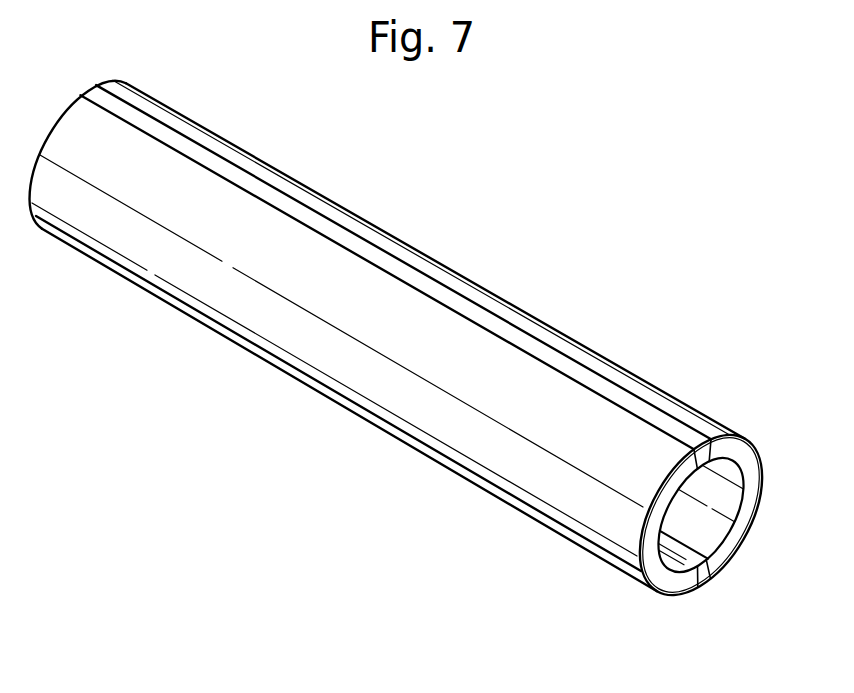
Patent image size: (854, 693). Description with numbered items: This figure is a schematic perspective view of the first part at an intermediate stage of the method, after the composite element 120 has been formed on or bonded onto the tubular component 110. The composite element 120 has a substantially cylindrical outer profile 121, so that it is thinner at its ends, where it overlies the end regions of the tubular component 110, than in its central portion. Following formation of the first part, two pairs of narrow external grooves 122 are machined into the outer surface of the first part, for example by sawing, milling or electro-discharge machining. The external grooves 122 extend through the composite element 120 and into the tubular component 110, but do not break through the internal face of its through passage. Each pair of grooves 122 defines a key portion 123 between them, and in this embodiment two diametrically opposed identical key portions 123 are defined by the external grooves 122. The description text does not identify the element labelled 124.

The tubular component 110 is at (670, 578).
The composite element 120 is at (753, 450).
The substantially cylindrical outer profile 121 is at (597, 520).
The narrow external grooves 122 is at (588, 391).
The key portion 123 is at (706, 438).
The upper longitudinal groove 124 is at (480, 313).